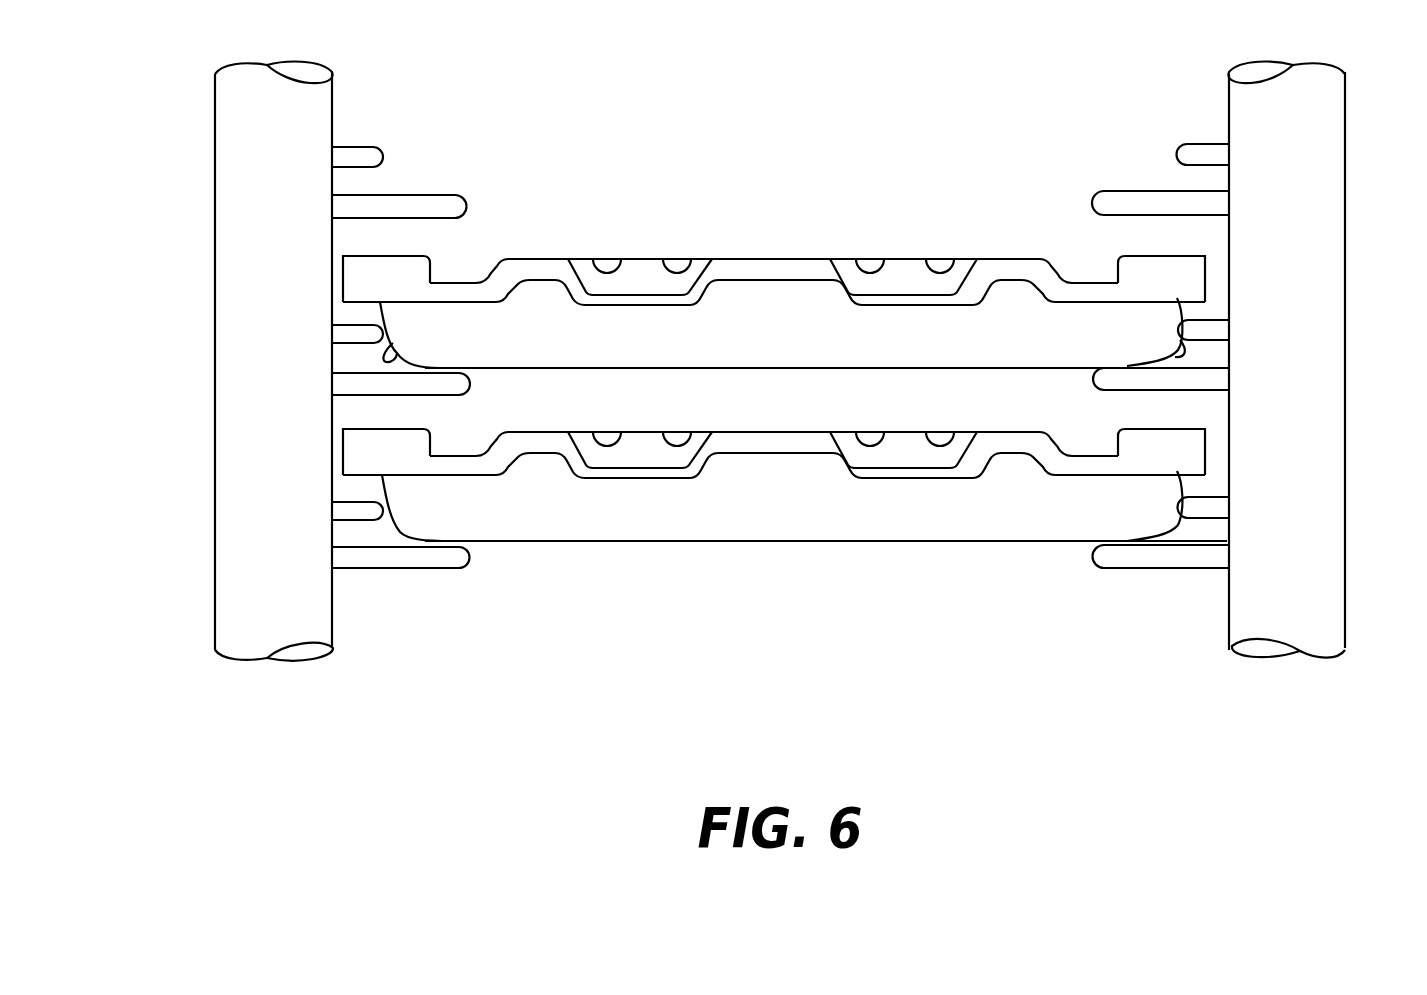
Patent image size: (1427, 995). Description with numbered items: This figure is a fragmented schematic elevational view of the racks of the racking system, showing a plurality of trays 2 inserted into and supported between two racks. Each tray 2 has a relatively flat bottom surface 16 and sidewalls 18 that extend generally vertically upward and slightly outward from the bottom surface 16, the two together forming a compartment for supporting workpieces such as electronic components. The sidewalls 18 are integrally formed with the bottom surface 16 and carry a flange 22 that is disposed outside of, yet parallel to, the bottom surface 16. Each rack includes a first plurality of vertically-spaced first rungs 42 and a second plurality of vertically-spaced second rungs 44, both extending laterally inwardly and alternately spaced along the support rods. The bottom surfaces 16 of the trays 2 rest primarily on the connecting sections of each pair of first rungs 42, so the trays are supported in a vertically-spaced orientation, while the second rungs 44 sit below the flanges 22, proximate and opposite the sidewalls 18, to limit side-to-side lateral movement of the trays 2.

The tray 2 is at (807, 259).
The bottom surface 16 is at (590, 369).
The sidewall 18 is at (387, 353).
The flange 22 is at (343, 260).
The first rung 42 is at (412, 195).
The second rung 44 is at (349, 147).